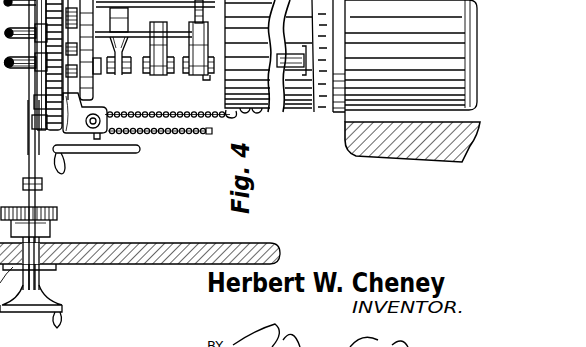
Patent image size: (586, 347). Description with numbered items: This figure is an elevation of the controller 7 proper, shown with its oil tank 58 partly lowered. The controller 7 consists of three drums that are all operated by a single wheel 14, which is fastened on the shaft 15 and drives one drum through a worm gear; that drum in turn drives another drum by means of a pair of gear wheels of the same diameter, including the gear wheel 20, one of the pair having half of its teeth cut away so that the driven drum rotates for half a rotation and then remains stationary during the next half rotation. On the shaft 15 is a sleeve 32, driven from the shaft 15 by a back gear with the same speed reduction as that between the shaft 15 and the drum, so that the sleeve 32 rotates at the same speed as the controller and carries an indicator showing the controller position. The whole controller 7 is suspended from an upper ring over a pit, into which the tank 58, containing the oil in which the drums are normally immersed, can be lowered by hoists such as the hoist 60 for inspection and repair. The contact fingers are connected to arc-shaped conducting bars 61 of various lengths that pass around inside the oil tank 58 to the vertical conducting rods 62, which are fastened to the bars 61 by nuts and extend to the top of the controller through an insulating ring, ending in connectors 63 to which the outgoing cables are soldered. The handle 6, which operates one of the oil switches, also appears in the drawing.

The handle 6 is at (40, 160).
The controller 7 is at (100, 88).
The wheel 14 is at (62, 307).
The shaft 15 is at (28, 143).
The gear wheel 20 is at (85, 116).
The sleeve 32 is at (50, 227).
The oil tank 58 is at (292, 114).
The hoist 60 is at (125, 154).
The arc-shaped conducting bar 61 is at (206, 34).
The vertical conducting rod 62 is at (155, 38).
The connector 63 is at (104, 12).